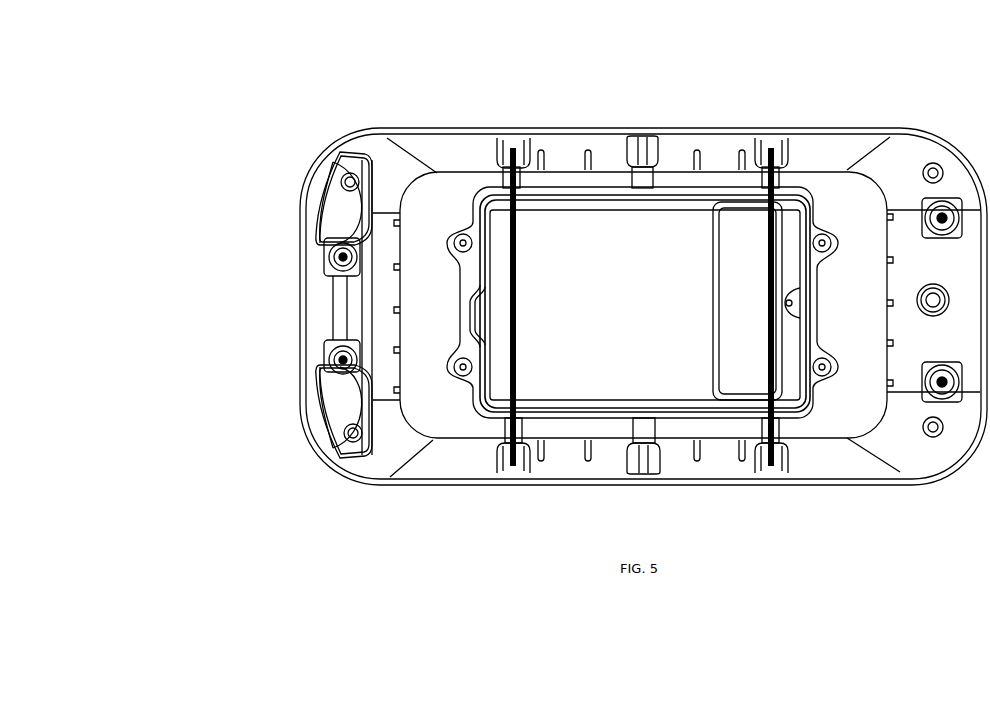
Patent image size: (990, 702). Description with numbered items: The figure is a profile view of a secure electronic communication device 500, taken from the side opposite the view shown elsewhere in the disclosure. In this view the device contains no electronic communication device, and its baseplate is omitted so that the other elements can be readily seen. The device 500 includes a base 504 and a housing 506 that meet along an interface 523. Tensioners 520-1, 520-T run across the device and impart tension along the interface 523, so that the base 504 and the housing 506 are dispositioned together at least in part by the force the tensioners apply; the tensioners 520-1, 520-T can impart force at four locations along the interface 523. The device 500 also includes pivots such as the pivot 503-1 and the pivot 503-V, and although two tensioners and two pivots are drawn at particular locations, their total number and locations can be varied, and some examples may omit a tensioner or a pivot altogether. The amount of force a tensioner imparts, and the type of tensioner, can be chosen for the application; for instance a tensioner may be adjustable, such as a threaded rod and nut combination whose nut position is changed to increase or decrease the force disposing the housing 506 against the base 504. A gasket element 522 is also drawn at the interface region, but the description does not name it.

The secure electronic communication device 500 is at (206, 48).
The base 504 is at (373, 129).
The housing 506 is at (452, 184).
The tensioner 520-1 is at (516, 148).
The tensioner 520-T is at (774, 148).
The pivot 503-1 is at (643, 182).
The bottom clip 503-V is at (642, 421).
The interface 523 is at (685, 177).
The inner gasket / window 522 is at (553, 412).